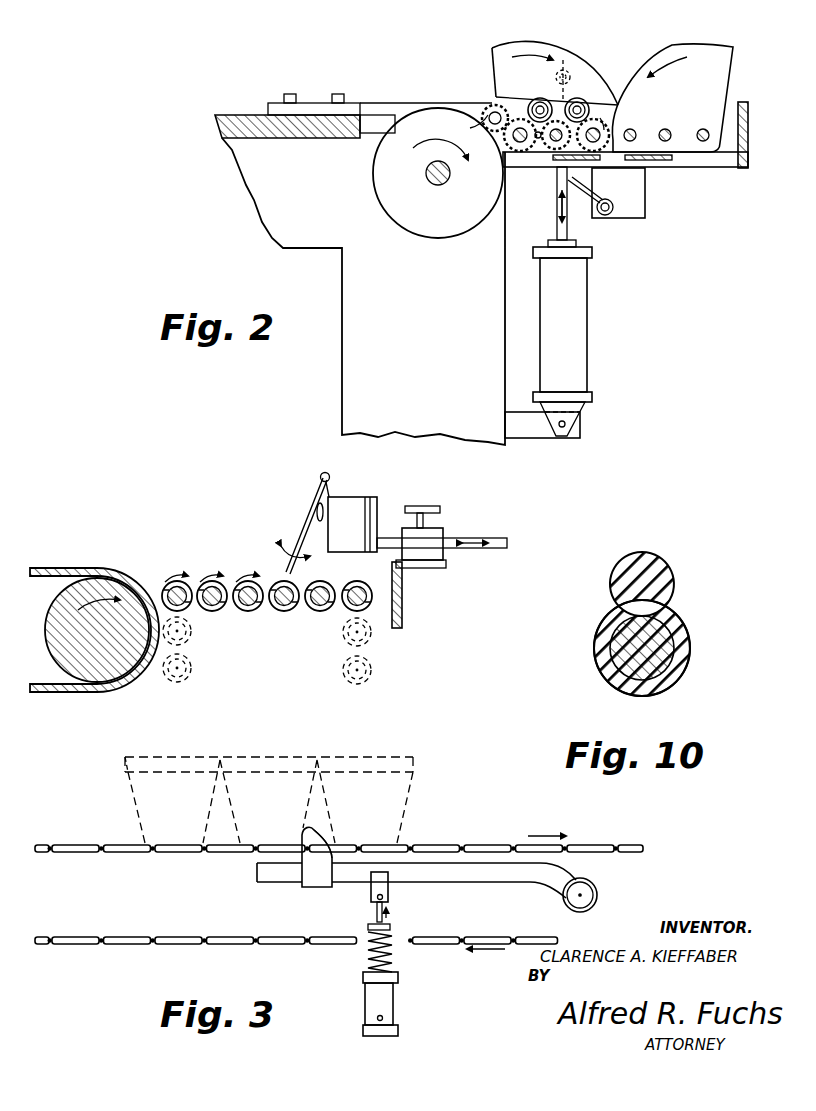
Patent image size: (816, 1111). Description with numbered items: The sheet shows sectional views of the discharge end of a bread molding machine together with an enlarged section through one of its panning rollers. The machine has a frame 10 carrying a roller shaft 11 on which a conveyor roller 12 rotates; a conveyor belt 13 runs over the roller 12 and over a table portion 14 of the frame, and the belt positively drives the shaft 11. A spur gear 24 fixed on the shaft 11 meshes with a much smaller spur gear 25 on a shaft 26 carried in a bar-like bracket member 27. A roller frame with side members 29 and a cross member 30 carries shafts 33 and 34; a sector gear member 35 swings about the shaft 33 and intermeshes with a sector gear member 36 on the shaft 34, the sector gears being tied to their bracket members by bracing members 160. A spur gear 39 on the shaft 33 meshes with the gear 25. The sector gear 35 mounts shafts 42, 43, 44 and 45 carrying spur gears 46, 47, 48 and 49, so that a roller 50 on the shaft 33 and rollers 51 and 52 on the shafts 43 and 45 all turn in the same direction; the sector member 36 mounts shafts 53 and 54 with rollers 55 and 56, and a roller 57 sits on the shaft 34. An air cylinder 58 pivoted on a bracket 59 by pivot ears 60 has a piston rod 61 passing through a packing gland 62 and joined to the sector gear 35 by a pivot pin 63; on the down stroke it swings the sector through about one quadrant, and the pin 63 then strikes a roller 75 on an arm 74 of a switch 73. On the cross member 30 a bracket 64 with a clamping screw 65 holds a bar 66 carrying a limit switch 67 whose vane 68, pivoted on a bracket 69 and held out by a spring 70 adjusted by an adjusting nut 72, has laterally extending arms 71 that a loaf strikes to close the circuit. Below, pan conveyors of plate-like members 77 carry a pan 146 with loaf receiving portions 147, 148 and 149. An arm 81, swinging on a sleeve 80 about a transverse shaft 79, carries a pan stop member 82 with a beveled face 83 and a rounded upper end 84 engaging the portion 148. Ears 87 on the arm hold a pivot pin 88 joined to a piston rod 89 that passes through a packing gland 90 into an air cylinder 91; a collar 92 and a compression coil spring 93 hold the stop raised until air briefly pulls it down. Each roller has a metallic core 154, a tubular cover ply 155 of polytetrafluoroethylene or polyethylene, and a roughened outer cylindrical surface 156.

In FIG. 2, the frame 10 is at (352, 352).
In FIG. 2, the roller shaft 11 is at (430, 172).
In FIG. 2, the conveyor roller 12 is at (108, 585).
In FIG. 2, the conveyor belt 13 is at (50, 568).
In FIG. 2, the table portion 14 is at (232, 118).
In FIG. 2, the spur gear 24 is at (414, 110).
In FIG. 2, the spur gear 25 is at (490, 102).
In FIG. 2, the shaft 26 is at (492, 110).
In FIG. 2, the bar-like bracket member 27 is at (360, 105).
In FIG. 2, the side members 29 is at (735, 165).
In FIG. 2, the cross member 30 is at (748, 141).
In FIG. 2, the shaft 33 is at (519, 152).
In FIG. 2, the shaft 34 is at (748, 104).
In FIG. 2, the sector gear member 35 is at (492, 48).
In FIG. 2, the sector gear member 36 is at (724, 47).
In FIG. 2, the spur gear 39 is at (524, 96).
In FIG. 2, the shaft 42 is at (564, 70).
In FIG. 2, the shaft 43 is at (556, 150).
In FIG. 2, the shaft 44 is at (602, 118).
In FIG. 2, the shaft 45 is at (631, 128).
In FIG. 2, the spur gear 46 is at (540, 98).
In FIG. 2, the spur gear 47 is at (538, 150).
In FIG. 2, the spur gear 48 is at (581, 98).
In FIG. 2, the spur gear 49 is at (598, 120).
In FIG. 2, the roller 50 is at (178, 580).
In FIG. 2, the roller 51 is at (214, 580).
In FIG. 2, the roller 52 is at (247, 612).
In FIG. 2, the shaft 53 is at (665, 128).
In FIG. 2, the shaft 54 is at (705, 128).
In FIG. 2, the roller 55 is at (285, 612).
In FIG. 2, the roller 56 is at (320, 612).
In FIG. 2, the roller 57 is at (357, 581).
In FIG. 2, the air cylinder 58 is at (580, 338).
In FIG. 2, the bracket 59 is at (530, 438).
In FIG. 2, the pivot ears 60 is at (585, 412).
In FIG. 2, the piston rod 61 is at (578, 98).
In FIG. 2, the packing gland 62 is at (577, 243).
In FIG. 2, the pivot pin 63 is at (569, 72).
In FIG. 2, the bracket 64 is at (446, 566).
In FIG. 2, the clamping screw 65 is at (425, 506).
In FIG. 2, the bar 66 is at (508, 540).
In FIG. 2, the limit switch 67 is at (355, 497).
In FIG. 2, the vane 68 is at (306, 522).
In FIG. 2, the bracket 69 is at (330, 496).
In FIG. 2, the spring 70 is at (320, 522).
In FIG. 2, the laterally extending arms 71 is at (280, 550).
In FIG. 2, the adjusting nut 72 is at (320, 479).
In FIG. 2, the switch 73 is at (645, 215).
In FIG. 2, the arm 74 is at (620, 170).
In FIG. 2, the roller 75 is at (606, 214).
In FIG. 3, the plate-like members 77 is at (123, 842).
In FIG. 3, the transverse shaft 79 is at (592, 885).
In FIG. 3, the sleeve 80 is at (598, 901).
In FIG. 3, the arm 81 is at (498, 878).
In FIG. 3, the pan stop member 82 is at (288, 863).
In FIG. 3, the beveled face 83 is at (318, 830).
In FIG. 3, the rounded upper end 84 is at (306, 831).
In FIG. 3, the ears 87 is at (388, 889).
In FIG. 3, the pivot pin 88 is at (376, 897).
In FIG. 3, the piston rod 89 is at (386, 915).
In FIG. 3, the packing gland 90 is at (398, 975).
In FIG. 3, the air cylinder 91 is at (375, 1003).
In FIG. 3, the collar 92 is at (368, 927).
In FIG. 3, the compression coil spring 93 is at (368, 956).
In FIG. 3, the pan 146 is at (365, 757).
In FIG. 3, the loaf receiving portion 147 is at (400, 803).
In FIG. 3, the loaf receiving portion 148 is at (242, 785).
In FIG. 3, the loaf receiving portion 149 is at (143, 786).
In FIG. 10, the metallic core 154 is at (662, 633).
In FIG. 10, the tubular cover ply 155 is at (690, 641).
In FIG. 10, the roughened outer cylindrical surface 156 is at (645, 602).
In FIG. 2, the bracing members 160 is at (662, 162).